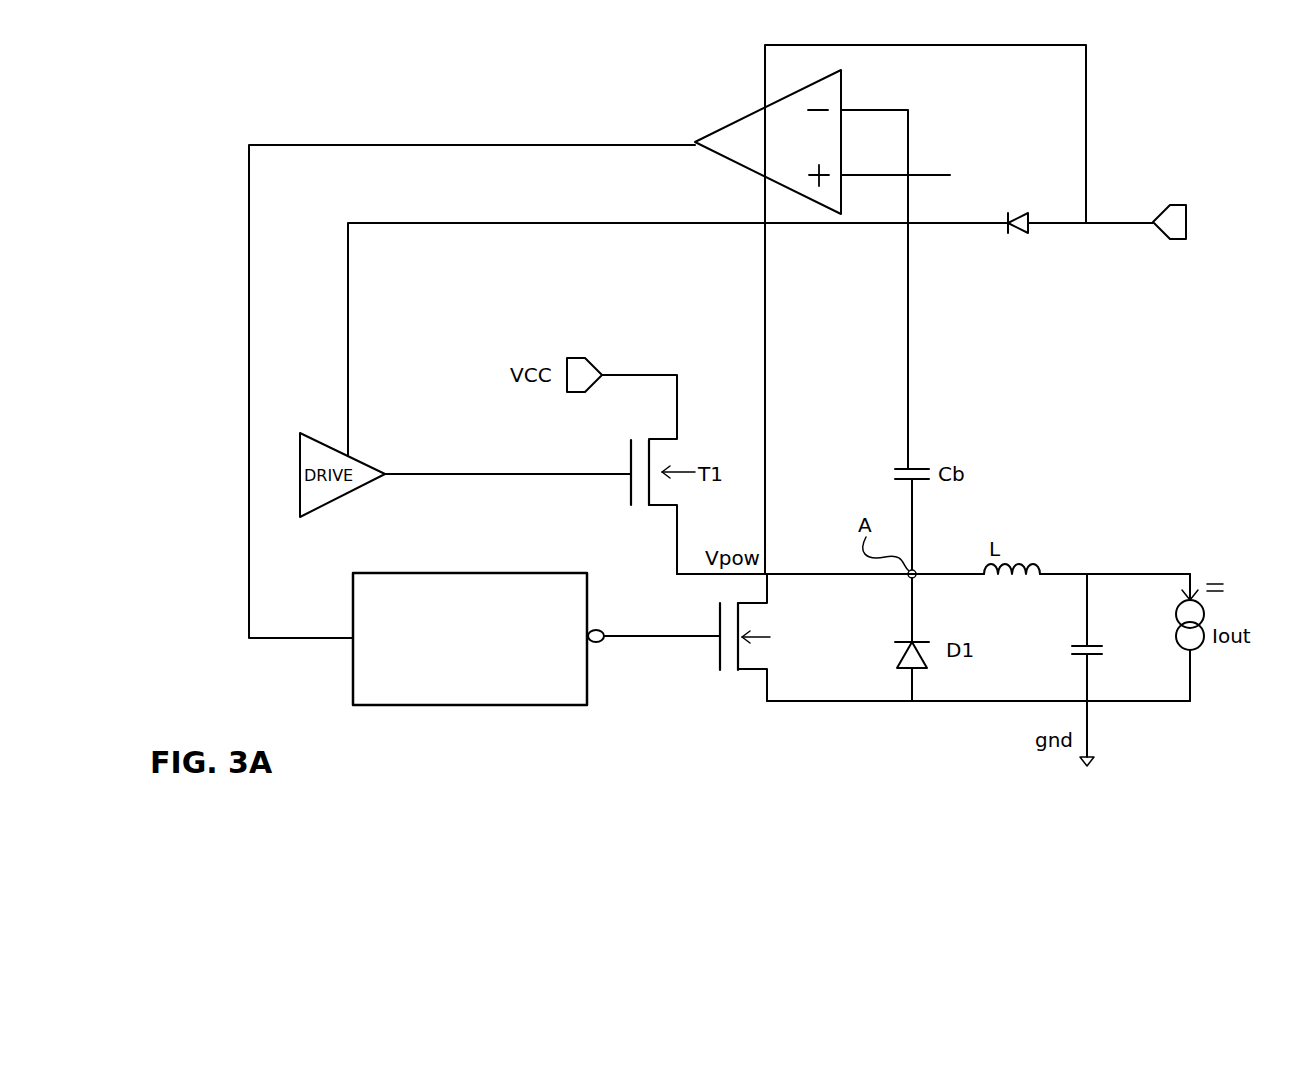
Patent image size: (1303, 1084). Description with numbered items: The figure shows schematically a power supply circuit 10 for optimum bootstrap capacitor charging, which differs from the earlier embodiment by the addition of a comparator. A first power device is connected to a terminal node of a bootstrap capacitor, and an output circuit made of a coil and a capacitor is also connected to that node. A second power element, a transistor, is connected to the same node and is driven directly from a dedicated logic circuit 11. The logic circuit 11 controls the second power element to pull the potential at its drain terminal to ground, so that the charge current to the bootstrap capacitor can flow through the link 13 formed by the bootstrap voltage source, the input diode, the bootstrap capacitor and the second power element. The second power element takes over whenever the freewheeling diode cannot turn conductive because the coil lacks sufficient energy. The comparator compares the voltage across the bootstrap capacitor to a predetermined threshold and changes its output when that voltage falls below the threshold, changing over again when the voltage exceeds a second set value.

The power supply circuit 10 is at (965, 198).
The logic circuit 11 is at (437, 687).
The link 13 is at (786, 688).